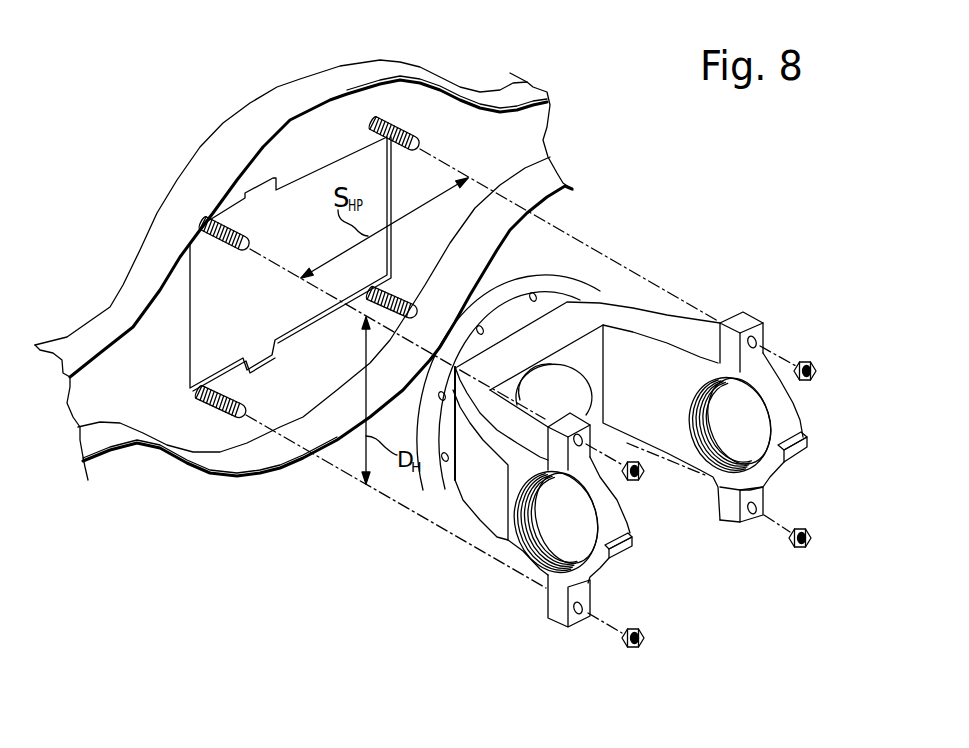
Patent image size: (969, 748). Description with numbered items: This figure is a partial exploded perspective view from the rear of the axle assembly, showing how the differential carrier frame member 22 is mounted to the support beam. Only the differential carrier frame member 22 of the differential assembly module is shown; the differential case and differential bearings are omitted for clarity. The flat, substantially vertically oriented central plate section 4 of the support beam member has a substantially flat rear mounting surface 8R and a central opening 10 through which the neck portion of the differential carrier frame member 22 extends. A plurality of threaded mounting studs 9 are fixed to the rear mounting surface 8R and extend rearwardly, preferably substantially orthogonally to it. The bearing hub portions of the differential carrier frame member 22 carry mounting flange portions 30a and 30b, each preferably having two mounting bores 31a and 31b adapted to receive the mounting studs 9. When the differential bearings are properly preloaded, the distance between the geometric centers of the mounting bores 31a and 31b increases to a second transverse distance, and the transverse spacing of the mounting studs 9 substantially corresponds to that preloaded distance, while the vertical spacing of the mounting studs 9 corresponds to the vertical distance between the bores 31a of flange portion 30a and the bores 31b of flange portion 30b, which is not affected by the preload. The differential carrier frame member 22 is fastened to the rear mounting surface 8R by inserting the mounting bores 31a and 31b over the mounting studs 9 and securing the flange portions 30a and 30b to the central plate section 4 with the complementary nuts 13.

The central plate section 4 is at (317, 249).
The rear mounting surface 8R is at (303, 153).
The threaded mounting studs 9 is at (396, 129).
The central opening 10 is at (191, 300).
The nuts 13 is at (817, 371).
The differential carrier frame member 22 is at (668, 444).
The mounting flange portion 30a is at (779, 316).
The mounting flange portion 30b is at (604, 631).
The mounting bores 31a is at (757, 341).
The mounting bores 31b is at (585, 606).